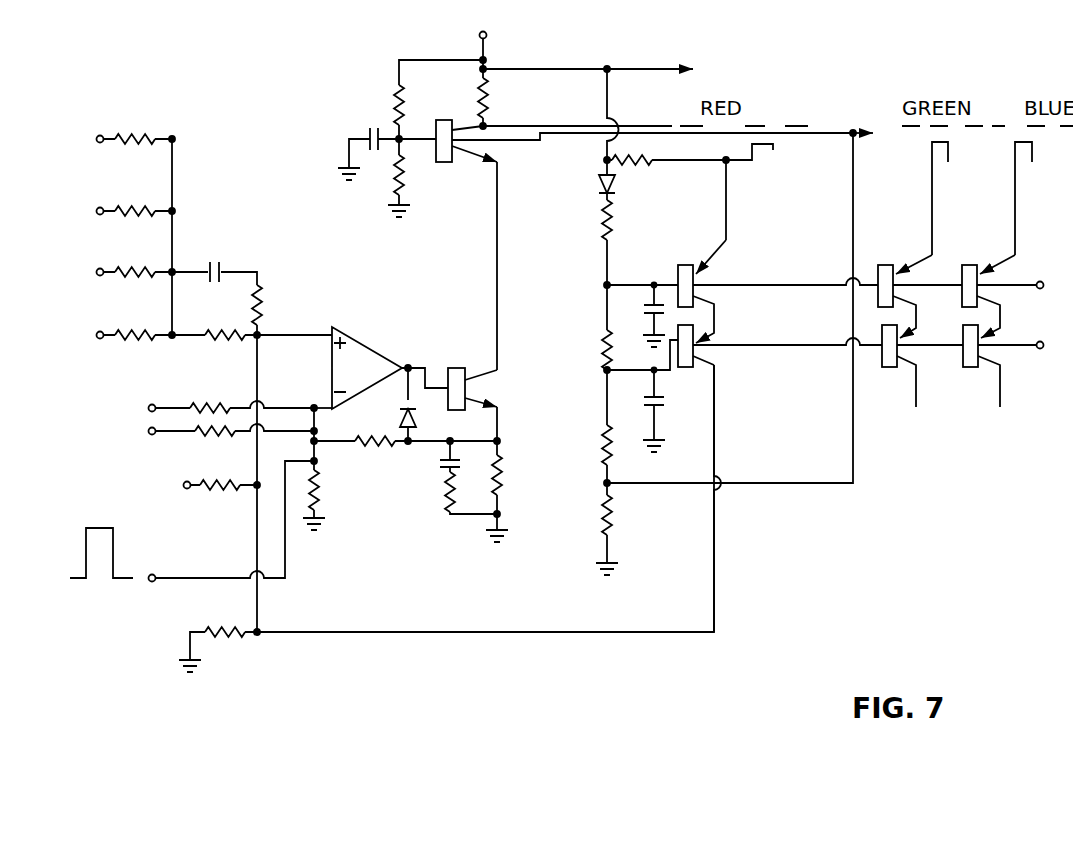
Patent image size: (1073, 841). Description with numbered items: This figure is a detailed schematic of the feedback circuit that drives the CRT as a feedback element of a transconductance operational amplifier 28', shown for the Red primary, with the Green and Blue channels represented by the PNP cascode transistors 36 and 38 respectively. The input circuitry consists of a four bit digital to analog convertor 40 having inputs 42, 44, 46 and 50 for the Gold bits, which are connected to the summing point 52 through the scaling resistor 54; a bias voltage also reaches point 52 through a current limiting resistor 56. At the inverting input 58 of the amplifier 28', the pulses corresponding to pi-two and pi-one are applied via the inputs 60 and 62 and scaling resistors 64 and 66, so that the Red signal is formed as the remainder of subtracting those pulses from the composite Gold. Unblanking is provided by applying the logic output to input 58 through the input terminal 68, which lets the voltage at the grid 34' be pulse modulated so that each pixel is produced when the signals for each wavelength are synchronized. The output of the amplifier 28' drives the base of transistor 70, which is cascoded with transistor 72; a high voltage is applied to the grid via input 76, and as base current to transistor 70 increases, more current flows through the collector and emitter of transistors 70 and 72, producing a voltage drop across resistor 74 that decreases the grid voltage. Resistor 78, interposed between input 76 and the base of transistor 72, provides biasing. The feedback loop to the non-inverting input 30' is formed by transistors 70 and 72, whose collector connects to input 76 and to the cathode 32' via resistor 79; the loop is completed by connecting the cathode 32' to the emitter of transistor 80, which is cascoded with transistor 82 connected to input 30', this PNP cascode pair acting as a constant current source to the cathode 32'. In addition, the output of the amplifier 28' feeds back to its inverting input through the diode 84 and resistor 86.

The operational amplifier 28' is at (373, 360).
The non-inverting input 30' is at (294, 317).
The cathode 32' is at (662, 156).
The grid 34' is at (778, 112).
The PNP cascode transistor 36 is at (924, 360).
The PNP cascode transistor 38 is at (1002, 360).
The four bit digital to analog convertor 40 is at (198, 207).
The input 42 is at (97, 140).
The input 44 is at (97, 212).
The input 46 is at (97, 273).
The input 50 is at (97, 336).
The summing point 52 is at (262, 336).
The scaling resistor 54 is at (216, 343).
The current limiting resistor 56 is at (211, 488).
The inverting input 58 is at (315, 404).
The input 60 is at (150, 408).
The input 62 is at (150, 434).
The scaling resistor 64 is at (210, 412).
The scaling resistor 66 is at (206, 434).
The input terminal 68 is at (152, 582).
The transistor 70 is at (457, 378).
The transistor 72 is at (440, 163).
The resistor 74 is at (480, 92).
The input 76 is at (480, 37).
The resistor 78 is at (398, 92).
The resistor 79 is at (648, 165).
The transistor 80 is at (690, 276).
The transistor 82 is at (688, 362).
The diode 84 is at (438, 444).
The resistor 86 is at (372, 447).